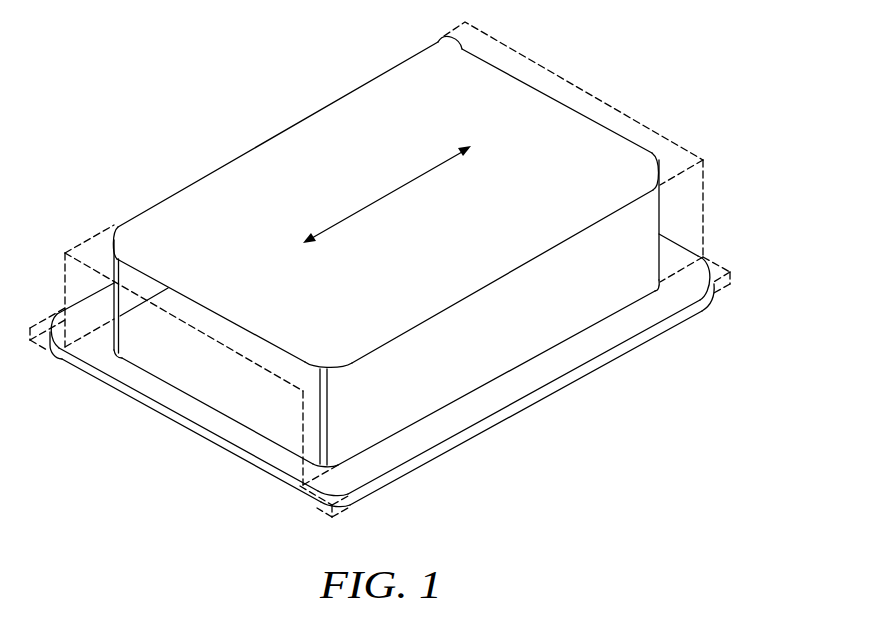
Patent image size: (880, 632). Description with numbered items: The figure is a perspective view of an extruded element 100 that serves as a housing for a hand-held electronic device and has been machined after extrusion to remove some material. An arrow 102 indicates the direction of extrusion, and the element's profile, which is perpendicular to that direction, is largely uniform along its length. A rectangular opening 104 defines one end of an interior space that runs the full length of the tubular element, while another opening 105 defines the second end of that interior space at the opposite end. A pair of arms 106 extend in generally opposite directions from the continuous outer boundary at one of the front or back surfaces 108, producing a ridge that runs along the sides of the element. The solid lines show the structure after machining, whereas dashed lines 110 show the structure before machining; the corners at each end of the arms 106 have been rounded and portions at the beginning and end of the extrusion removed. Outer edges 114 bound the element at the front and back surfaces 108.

The extruded element 100 is at (721, 86).
The arrow 102 is at (389, 193).
The rectangular opening 104 is at (258, 380).
The opening 105 is at (606, 117).
The arms 106 is at (77, 315).
The front or back surfaces 108 is at (527, 97).
The dashed lines 110 is at (705, 177).
The outer edges 114 is at (232, 321).